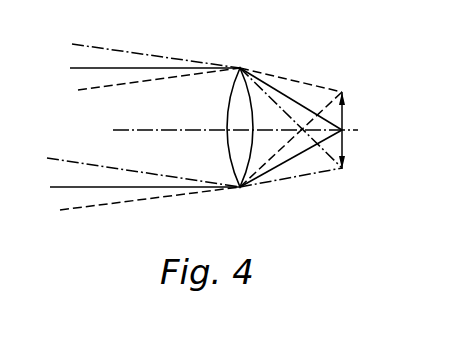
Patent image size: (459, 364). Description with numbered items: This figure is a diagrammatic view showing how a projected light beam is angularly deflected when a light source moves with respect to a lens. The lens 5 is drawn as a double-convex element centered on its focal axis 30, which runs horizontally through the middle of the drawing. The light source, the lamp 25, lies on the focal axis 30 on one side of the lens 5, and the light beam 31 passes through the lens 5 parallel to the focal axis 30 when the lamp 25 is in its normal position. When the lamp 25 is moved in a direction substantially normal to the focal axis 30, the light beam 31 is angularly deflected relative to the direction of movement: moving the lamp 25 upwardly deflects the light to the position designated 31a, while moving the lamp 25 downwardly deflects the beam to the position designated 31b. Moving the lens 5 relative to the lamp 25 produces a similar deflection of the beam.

The lens 5 is at (228, 153).
The lamp 25 is at (344, 129).
The focal axis 30 is at (130, 128).
The light beam 31 is at (132, 68).
The light beam position (upward lamp movement) 31a is at (110, 84).
The light beam position (downward lamp movement) 31b is at (88, 44).